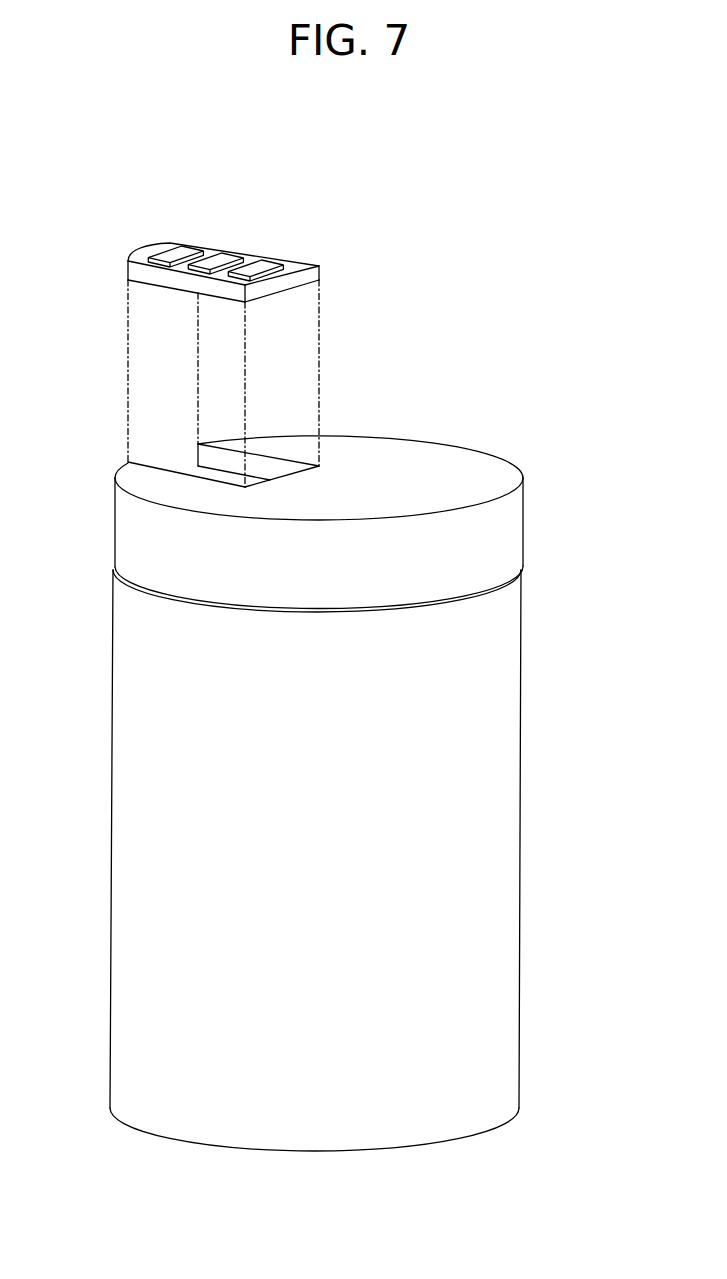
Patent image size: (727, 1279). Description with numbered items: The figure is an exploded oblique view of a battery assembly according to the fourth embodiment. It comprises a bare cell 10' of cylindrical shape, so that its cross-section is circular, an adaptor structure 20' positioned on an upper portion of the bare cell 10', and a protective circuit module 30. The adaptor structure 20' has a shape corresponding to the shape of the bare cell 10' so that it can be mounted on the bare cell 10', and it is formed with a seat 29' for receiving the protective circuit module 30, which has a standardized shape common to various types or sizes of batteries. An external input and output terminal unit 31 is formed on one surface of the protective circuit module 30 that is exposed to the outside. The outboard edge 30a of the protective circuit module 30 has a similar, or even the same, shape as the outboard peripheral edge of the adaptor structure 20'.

The bare cell 10' is at (367, 860).
The adaptor structure 20' is at (324, 492).
The seat 29' is at (198, 433).
The protective circuit module 30 is at (295, 265).
The outboard edge 30a is at (128, 272).
The external input and output terminal unit 31 is at (227, 260).